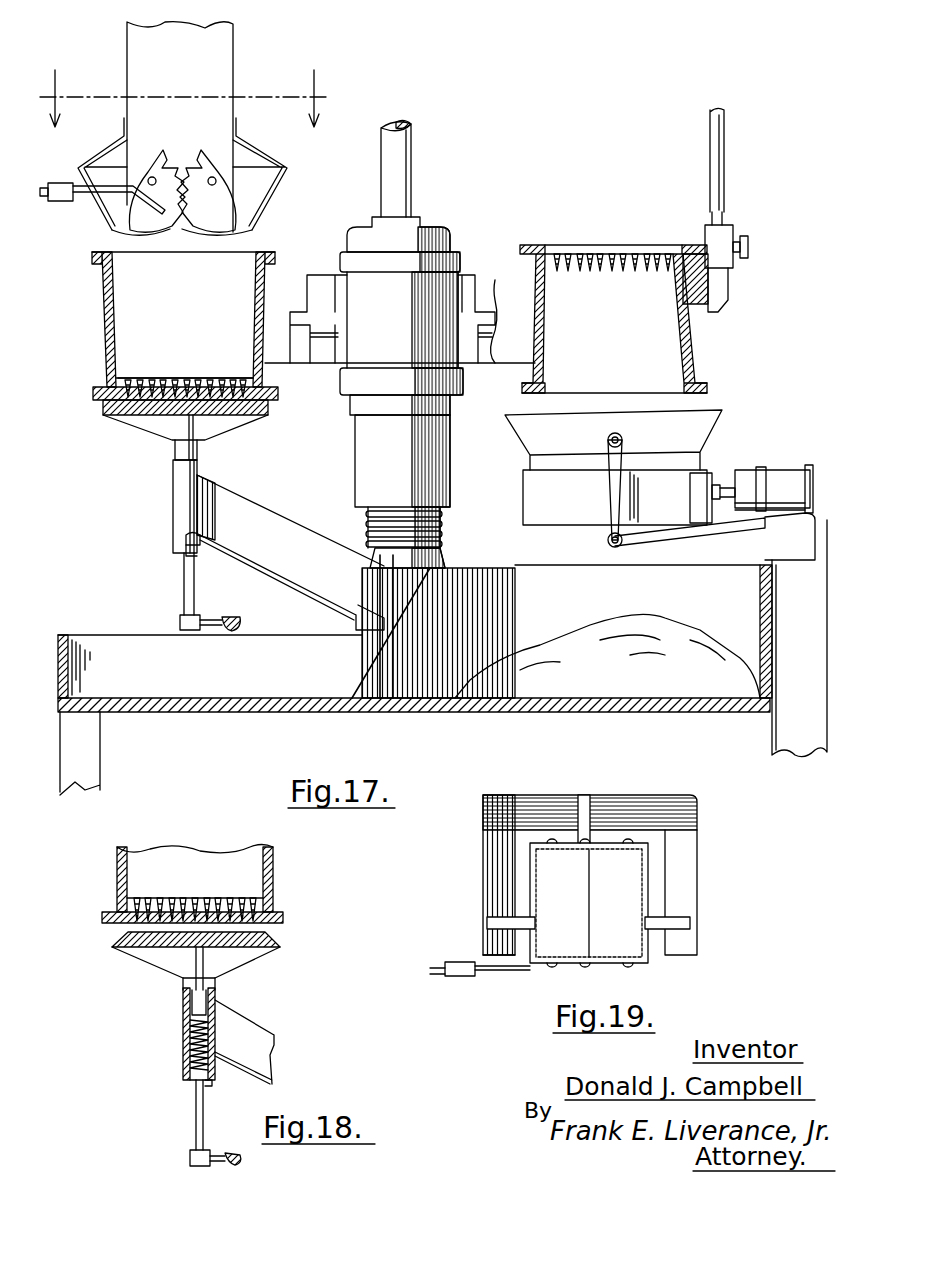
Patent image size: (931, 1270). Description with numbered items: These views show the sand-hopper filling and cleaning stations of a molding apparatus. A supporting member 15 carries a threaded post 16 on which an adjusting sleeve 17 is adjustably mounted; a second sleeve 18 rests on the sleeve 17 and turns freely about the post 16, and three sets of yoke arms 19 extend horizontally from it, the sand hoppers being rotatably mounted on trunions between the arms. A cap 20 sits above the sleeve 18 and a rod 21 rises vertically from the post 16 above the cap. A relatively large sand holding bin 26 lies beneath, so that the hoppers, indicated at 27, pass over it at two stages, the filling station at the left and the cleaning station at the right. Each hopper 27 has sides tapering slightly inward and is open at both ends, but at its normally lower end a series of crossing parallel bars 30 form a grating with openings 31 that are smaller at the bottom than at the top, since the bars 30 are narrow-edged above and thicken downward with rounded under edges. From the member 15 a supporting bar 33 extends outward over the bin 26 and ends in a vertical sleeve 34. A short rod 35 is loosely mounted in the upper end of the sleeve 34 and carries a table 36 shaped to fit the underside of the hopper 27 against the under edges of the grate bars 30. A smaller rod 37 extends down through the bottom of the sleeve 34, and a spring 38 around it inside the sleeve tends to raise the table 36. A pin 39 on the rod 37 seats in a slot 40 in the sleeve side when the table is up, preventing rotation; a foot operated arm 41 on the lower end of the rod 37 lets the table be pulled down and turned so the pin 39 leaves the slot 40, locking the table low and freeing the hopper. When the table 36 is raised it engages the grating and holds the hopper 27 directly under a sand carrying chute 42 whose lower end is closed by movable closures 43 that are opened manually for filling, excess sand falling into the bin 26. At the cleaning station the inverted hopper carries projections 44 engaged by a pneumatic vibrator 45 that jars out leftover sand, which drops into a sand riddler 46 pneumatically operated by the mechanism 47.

In FIG. 17, the supporting member 15 is at (440, 562).
In FIG. 17, the threaded post 16 is at (442, 525).
In FIG. 17, the adjusting sleeve 17 is at (435, 468).
In FIG. 17, the second sleeve 18 is at (432, 302).
In FIG. 17, the yoke arms 19 is at (537, 297).
In FIG. 17, the cap 20 is at (437, 231).
In FIG. 17, the rod 21 is at (411, 186).
In FIG. 17, the sand holding bin 26 is at (400, 708).
In FIG. 17, the sand hopper 27 is at (107, 312).
In FIG. 18, the sand hopper 27 is at (273, 865).
In FIG. 17, the grate bars 30 is at (143, 378).
In FIG. 18, the grate bars 30 is at (140, 898).
In FIG. 17, the openings 31 is at (181, 380).
In FIG. 18, the openings 31 is at (185, 898).
In FIG. 17, the supporting bar 33 is at (278, 530).
In FIG. 18, the supporting bar 33 is at (245, 1032).
In FIG. 17, the vertical sleeve 34 is at (182, 486).
In FIG. 18, the vertical sleeve 34 is at (184, 1010).
In FIG. 17, the short rod 35 is at (198, 455).
In FIG. 18, the short rod 35 is at (216, 988).
In FIG. 17, the table 36 is at (245, 402).
In FIG. 18, the table 36 is at (255, 942).
In FIG. 17, the rod 37 is at (196, 598).
In FIG. 18, the rod 37 is at (196, 1100).
In FIG. 18, the spring 38 is at (190, 1050).
In FIG. 17, the pin 39 is at (201, 536).
In FIG. 18, the pin 39 is at (212, 1088).
In FIG. 17, the slot 40 is at (200, 546).
In FIG. 17, the foot operated arm 41 is at (225, 619).
In FIG. 18, the foot operated arm 41 is at (226, 1155).
In FIG. 17, the sand carrying chute 42 is at (222, 78).
In FIG. 17, the movable closures 43 is at (137, 214).
In FIG. 17, the projections 44 is at (726, 290).
In FIG. 17, the pneumatic vibrator 45 is at (720, 243).
In FIG. 17, the sand riddler 46 is at (678, 468).
In FIG. 19, the sand riddler 46 is at (648, 852).
In FIG. 17, the operating mechanism 47 is at (770, 478).